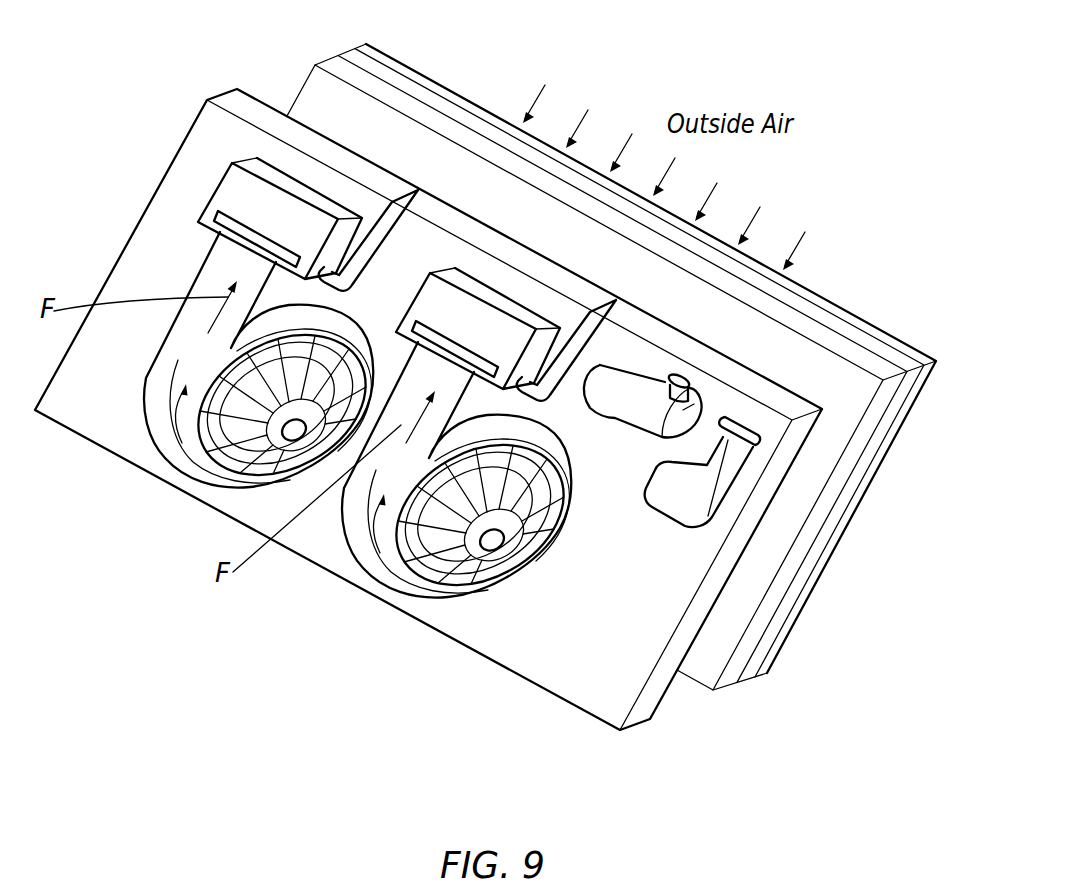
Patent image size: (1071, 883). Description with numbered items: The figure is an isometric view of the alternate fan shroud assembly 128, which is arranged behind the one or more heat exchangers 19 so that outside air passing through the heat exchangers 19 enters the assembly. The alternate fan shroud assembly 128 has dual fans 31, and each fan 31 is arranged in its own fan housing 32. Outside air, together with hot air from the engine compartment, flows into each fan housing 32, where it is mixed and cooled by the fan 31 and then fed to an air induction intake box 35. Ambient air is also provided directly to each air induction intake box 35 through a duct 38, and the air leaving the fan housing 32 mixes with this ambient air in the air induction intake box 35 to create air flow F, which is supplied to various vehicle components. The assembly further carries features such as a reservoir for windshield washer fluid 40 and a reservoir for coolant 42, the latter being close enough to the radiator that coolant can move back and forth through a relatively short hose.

The heat exchangers 19 is at (918, 333).
The alternate fan shroud assembly 128 is at (98, 166).
The air induction intake box 35 is at (221, 178).
The duct 38 is at (388, 232).
The fan housing 32 is at (183, 476).
The fan 31 is at (287, 441).
The reservoir for coolant 42 is at (646, 432).
The reservoir for windshield washer fluid 40 is at (727, 493).